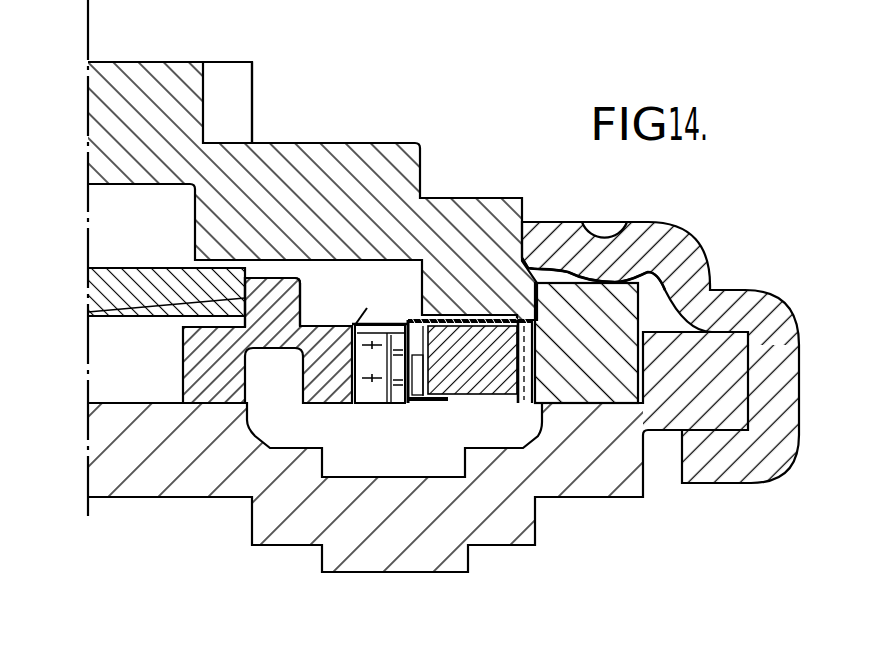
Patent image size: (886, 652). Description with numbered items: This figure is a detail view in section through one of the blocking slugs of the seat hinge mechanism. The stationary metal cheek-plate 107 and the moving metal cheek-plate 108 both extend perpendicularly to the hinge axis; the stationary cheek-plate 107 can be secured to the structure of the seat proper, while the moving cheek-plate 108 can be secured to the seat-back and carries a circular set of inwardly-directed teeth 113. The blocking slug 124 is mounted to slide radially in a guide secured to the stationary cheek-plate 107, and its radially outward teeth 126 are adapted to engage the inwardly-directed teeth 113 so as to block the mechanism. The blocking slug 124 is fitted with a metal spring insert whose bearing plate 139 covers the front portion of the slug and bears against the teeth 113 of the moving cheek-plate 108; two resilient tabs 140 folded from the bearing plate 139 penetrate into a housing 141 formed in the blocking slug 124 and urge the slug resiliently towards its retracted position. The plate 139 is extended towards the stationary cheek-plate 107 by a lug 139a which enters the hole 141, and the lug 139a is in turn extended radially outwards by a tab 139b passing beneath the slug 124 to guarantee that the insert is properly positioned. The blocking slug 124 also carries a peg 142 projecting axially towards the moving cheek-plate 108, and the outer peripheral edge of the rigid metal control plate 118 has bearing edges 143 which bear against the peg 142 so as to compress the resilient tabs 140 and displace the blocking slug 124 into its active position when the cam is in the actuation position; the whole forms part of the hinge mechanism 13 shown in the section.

The valve assembly 13 is at (403, 318).
The stationary metal cheek-plate 107 is at (590, 475).
The moving metal cheek-plate 108 is at (380, 163).
The inwardly-directed teeth 113 is at (536, 278).
The control plate 118 is at (133, 293).
The blocking slug 124 is at (210, 363).
The teeth 126 is at (618, 463).
The bearing plate 139 is at (470, 325).
The lug 139a is at (425, 403).
The tab 139b is at (433, 403).
The resilient tabs 140 is at (372, 398).
The housing 141 is at (367, 308).
The peg 142 is at (270, 298).
The bearing edges 143 is at (90, 312).